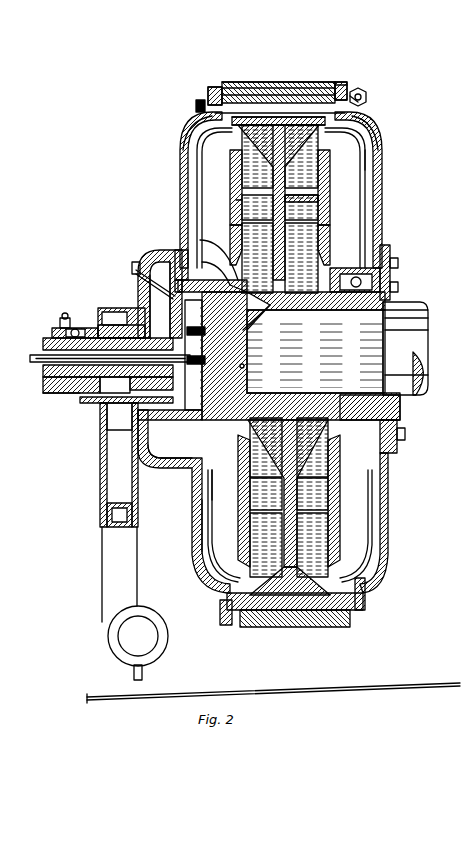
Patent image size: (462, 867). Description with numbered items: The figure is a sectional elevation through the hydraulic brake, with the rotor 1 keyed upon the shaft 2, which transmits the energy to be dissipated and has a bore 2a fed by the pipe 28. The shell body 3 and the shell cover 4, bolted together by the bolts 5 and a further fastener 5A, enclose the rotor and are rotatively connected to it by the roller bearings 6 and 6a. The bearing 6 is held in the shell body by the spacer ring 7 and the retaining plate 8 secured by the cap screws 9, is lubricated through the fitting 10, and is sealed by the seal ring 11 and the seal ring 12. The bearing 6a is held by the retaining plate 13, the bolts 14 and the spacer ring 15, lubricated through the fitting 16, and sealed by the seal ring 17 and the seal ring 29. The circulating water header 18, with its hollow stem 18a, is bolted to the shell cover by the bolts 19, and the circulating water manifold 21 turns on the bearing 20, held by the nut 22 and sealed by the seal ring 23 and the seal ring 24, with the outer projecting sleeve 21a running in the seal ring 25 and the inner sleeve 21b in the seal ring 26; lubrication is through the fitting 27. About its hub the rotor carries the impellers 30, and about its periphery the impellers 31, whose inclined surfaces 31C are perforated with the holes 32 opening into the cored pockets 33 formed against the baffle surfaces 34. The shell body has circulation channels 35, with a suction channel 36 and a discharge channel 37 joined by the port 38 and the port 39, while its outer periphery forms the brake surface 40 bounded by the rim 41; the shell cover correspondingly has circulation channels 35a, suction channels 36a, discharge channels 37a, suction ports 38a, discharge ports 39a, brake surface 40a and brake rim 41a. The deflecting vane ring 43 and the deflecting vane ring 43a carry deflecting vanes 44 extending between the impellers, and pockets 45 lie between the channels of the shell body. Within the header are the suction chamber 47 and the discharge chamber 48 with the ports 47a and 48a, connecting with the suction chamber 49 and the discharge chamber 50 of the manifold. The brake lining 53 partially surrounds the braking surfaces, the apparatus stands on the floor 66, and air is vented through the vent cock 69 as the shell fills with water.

The rotor 1 is at (236, 85).
The shaft 2 is at (416, 304).
The bore 2a is at (428, 354).
The shell body 3 is at (285, 82).
The shell cover 4 is at (312, 82).
The bolts 5 is at (218, 82).
The cover ring section 5A is at (284, 82).
The roller bearing 6 is at (352, 268).
The roller bearing 6a is at (180, 243).
The spacer ring 7 is at (388, 318).
The retaining plate 8 is at (391, 256).
The cap screws 9 is at (399, 263).
The fitting 10 is at (399, 285).
The seal ring 11 is at (386, 432).
The seal ring 12 is at (399, 413).
The retaining plate 13 is at (243, 366).
The bolts 14 is at (158, 256).
The spacer ring 15 is at (170, 443).
The fitting 16 is at (135, 290).
The seal ring 17 is at (240, 294).
The circulating water header 18 is at (146, 262).
The water header stem 18a is at (108, 384).
The bolts 19 is at (134, 265).
The bearing 20 is at (63, 392).
The circulating water manifold 21 is at (102, 406).
The outer projecting sleeve 21a is at (110, 417).
The inner sleeve 21b is at (97, 401).
The nut 22 is at (46, 340).
The seal ring 23 is at (62, 324).
The seal ring 24 is at (100, 395).
The fitting 25 is at (72, 320).
The seal ring 26 is at (115, 426).
The fitting 27 is at (110, 300).
The pipe 28 is at (30, 357).
The seal ring 29 is at (45, 352).
The impellers 30 is at (272, 247).
The impellers 31 is at (322, 158).
The longitudinally inclined surfaces 31C is at (196, 108).
The holes 32 is at (190, 153).
The cored pockets 33 is at (350, 98).
The baffle surfaces 34 is at (340, 88).
The circulation channels 35 is at (365, 165).
The circulation channels 35a is at (212, 183).
The suction channel 36 is at (390, 556).
The suction channels 36a is at (208, 561).
The discharge channel 37 is at (374, 142).
The discharge channels 37a is at (200, 166).
The port 38 is at (330, 526).
The suction ports 38a is at (228, 537).
The port 39 is at (383, 135).
The discharge ports 39a is at (186, 120).
The brake surface 40 is at (330, 82).
The brake surface 40a is at (235, 120).
The rim 41 is at (345, 95).
The brake rim 41a is at (208, 90).
The deflecting vane ring 43 is at (330, 185).
The deflecting vane ring 43a is at (233, 197).
The deflecting vanes 44 is at (320, 205).
The pockets 45 is at (366, 592).
The suction chamber 47 is at (156, 463).
The ports 47a is at (180, 442).
The discharge chamber 48 is at (160, 262).
The ports 48a is at (200, 262).
The suction chamber 49 is at (100, 307).
The discharge chamber 50 is at (106, 318).
The brake lining 53 is at (306, 82).
The floor 66 is at (357, 689).
The vent cock 69 is at (367, 98).